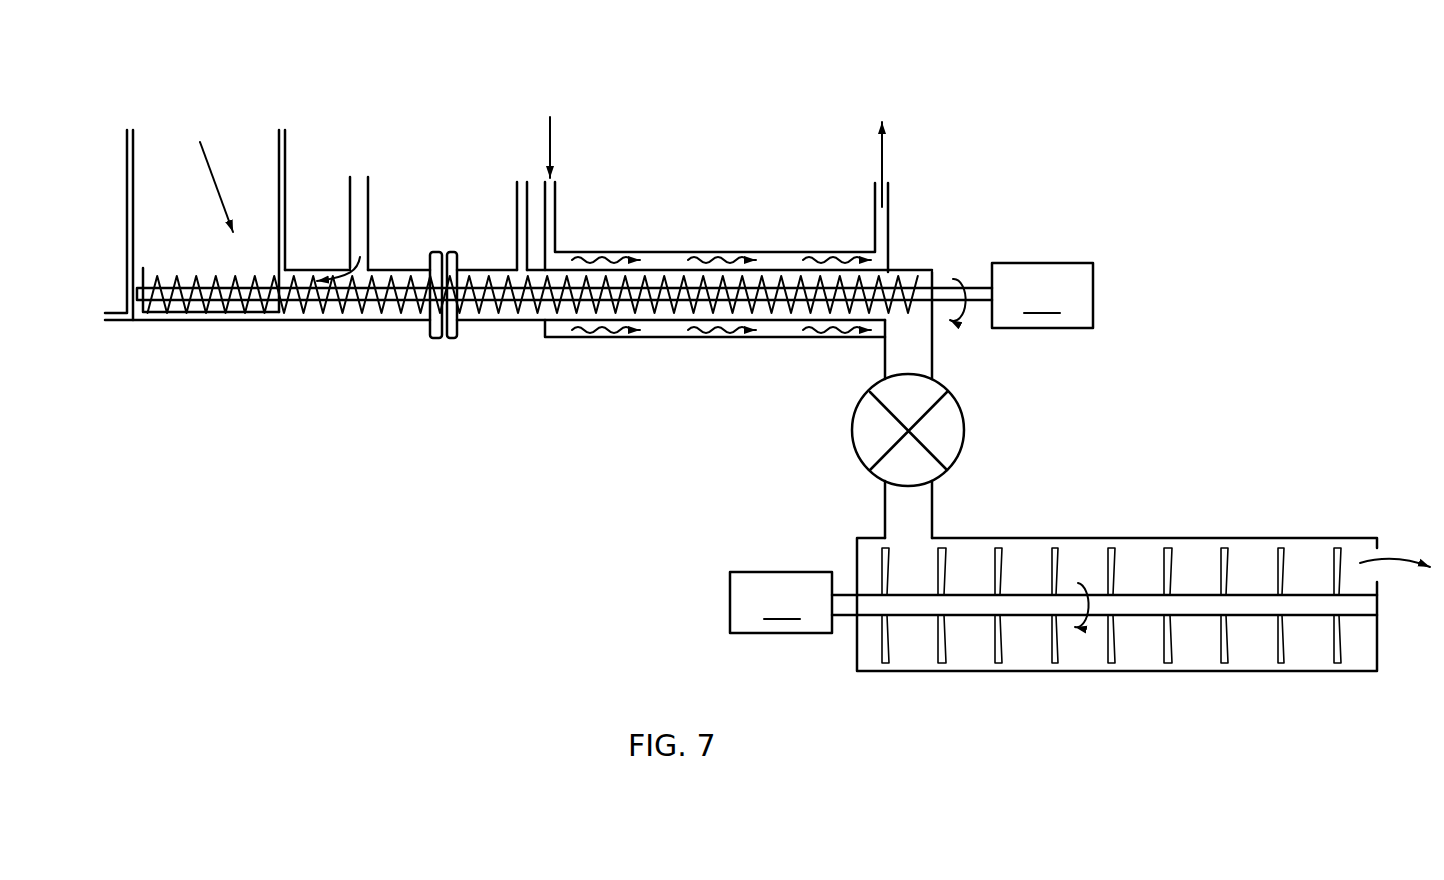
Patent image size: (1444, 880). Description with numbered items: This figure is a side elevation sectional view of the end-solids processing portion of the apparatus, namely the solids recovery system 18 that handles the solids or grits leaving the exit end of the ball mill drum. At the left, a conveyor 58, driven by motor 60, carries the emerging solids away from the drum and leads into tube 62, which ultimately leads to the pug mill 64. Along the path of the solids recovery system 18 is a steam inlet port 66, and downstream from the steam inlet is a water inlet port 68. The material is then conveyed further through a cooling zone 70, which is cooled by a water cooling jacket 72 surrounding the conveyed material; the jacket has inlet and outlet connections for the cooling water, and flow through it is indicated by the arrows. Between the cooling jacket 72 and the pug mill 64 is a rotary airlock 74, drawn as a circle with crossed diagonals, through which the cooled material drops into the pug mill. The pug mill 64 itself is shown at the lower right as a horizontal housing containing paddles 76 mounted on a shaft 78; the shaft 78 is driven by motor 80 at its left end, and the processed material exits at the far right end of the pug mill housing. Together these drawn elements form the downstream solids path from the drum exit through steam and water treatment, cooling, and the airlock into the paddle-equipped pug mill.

The solids recovery system 18 is at (655, 365).
The conveyor 58 is at (408, 316).
The motor 60 is at (1042, 295).
The tube 62 is at (522, 322).
The pug mill 64 is at (1174, 520).
The steam inlet port 66 is at (360, 227).
The water inlet port 68 is at (522, 180).
The cooling zone 70 is at (672, 185).
The water cooling jacket 72 is at (763, 258).
The rotary airlock 74 is at (948, 433).
The paddles 76 is at (1003, 633).
The shaft 78 is at (1253, 610).
The motor 80 is at (781, 602).